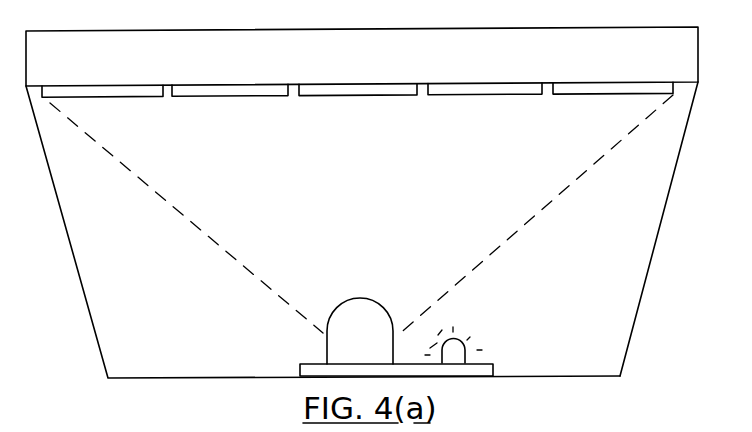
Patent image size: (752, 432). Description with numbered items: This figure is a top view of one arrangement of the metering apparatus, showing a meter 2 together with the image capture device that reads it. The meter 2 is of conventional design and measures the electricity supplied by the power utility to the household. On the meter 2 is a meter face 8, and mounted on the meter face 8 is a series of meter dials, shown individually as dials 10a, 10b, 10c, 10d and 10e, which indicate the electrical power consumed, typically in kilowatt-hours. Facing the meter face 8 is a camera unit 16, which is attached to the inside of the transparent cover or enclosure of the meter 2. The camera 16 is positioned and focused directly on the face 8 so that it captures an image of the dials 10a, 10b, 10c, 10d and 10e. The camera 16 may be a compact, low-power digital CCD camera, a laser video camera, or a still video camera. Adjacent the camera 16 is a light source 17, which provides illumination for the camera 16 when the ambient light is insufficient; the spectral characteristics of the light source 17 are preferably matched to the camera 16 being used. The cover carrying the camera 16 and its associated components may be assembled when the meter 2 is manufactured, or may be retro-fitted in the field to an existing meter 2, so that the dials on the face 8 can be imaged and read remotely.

The housing 2 is at (637, 311).
The side wall of housing 8 is at (677, 170).
The light receiving element 10a is at (103, 97).
The light receiving element 10b is at (220, 96).
The light receiving element 10c is at (341, 95).
The light receiving element 10d is at (471, 94).
The light receiving element 10e is at (595, 93).
The light source dome 16 is at (360, 308).
The light emitting element 17 is at (458, 345).